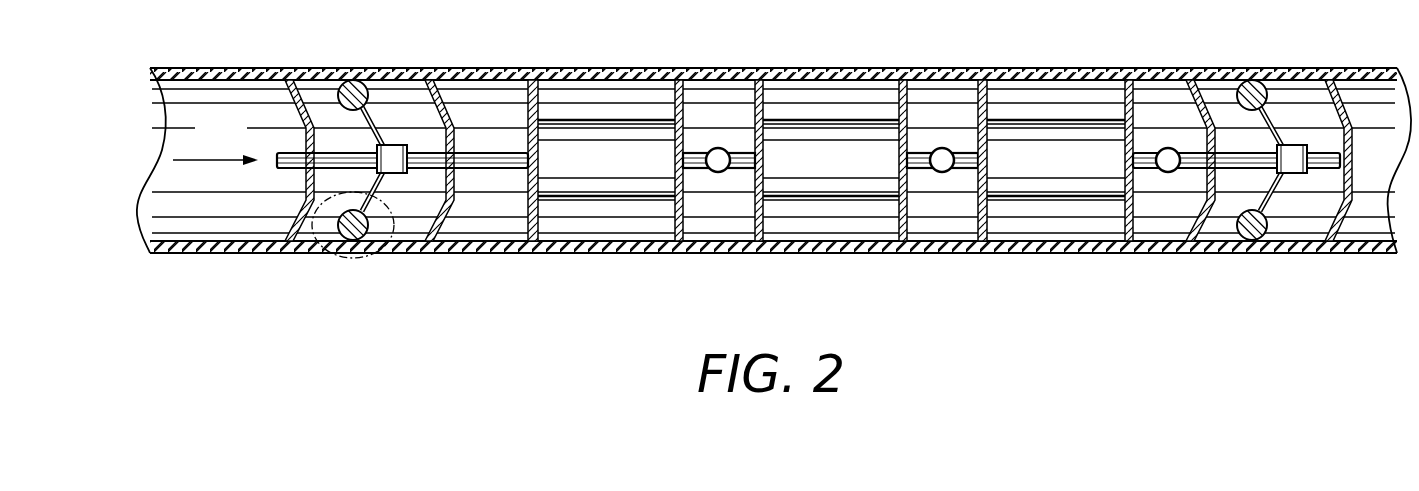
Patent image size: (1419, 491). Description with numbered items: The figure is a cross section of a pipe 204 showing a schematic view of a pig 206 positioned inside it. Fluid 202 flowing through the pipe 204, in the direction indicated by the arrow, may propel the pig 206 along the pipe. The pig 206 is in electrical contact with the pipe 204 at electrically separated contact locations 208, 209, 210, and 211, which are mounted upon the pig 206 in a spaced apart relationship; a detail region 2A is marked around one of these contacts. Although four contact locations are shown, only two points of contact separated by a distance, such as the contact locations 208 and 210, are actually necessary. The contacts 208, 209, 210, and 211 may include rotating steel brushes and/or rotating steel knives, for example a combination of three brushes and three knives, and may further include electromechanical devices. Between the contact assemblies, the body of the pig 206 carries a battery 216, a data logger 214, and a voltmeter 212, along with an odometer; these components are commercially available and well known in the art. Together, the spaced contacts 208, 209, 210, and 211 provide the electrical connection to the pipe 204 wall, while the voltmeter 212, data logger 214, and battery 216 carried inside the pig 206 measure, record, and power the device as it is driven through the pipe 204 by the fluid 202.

The fluid 202 is at (243, 143).
The pipe 204 is at (212, 70).
The pig 206 is at (997, 68).
The contact location 208 is at (340, 248).
The contact location 209 is at (360, 78).
The contact location 210 is at (1250, 230).
The contact location 211 is at (1248, 82).
The voltmeter 212 is at (1088, 188).
The data logger 214 is at (802, 127).
The battery 216 is at (563, 125).
The detail region 2A is at (370, 255).